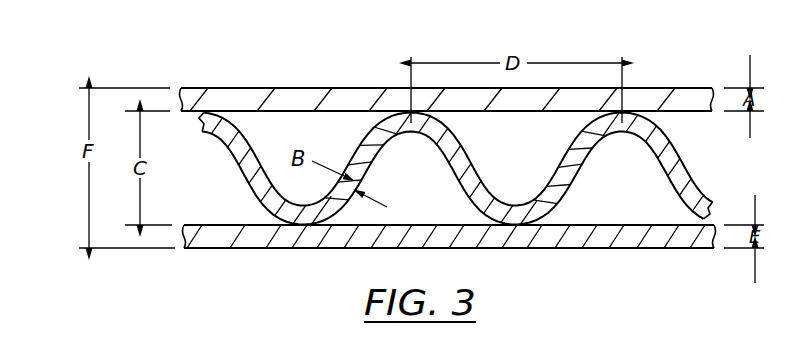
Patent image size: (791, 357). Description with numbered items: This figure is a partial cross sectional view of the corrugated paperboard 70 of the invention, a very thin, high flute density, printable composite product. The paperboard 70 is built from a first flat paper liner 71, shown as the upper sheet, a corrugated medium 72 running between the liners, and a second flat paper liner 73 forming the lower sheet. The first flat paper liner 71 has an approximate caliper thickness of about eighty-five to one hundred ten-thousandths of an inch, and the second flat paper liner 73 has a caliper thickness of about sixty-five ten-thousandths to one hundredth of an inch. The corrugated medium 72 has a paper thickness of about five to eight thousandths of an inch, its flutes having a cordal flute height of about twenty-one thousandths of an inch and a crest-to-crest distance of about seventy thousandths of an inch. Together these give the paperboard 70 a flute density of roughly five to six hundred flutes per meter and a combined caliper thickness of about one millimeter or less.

The corrugated paperboard 70 is at (248, 80).
The first flat paper liner 71 is at (334, 62).
The corrugated medium 72 is at (232, 163).
The second flat paper liner 73 is at (248, 249).